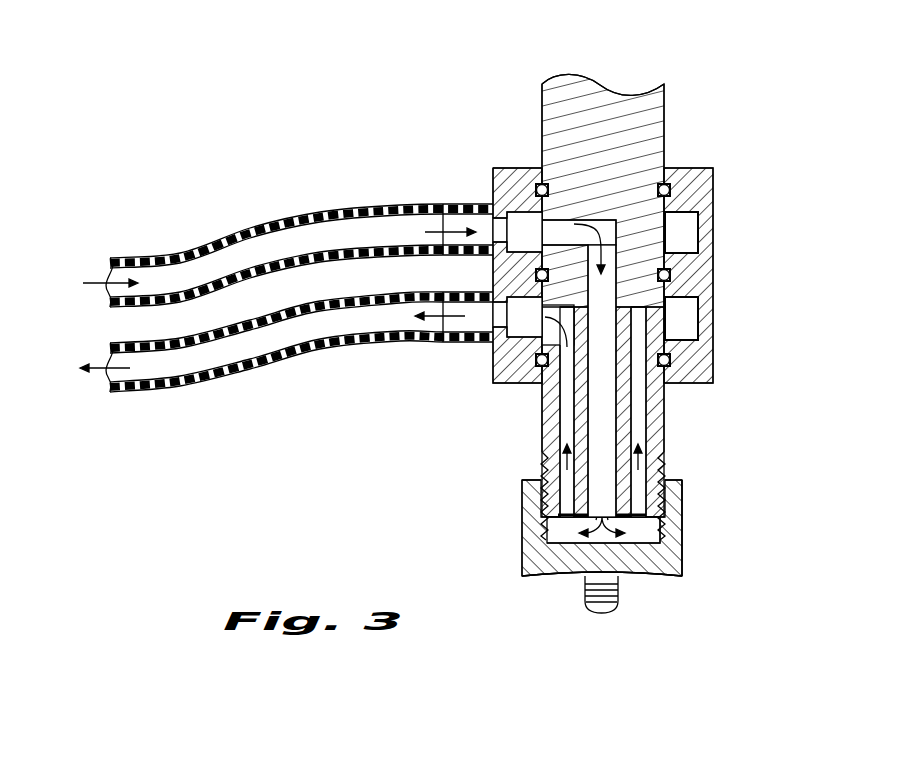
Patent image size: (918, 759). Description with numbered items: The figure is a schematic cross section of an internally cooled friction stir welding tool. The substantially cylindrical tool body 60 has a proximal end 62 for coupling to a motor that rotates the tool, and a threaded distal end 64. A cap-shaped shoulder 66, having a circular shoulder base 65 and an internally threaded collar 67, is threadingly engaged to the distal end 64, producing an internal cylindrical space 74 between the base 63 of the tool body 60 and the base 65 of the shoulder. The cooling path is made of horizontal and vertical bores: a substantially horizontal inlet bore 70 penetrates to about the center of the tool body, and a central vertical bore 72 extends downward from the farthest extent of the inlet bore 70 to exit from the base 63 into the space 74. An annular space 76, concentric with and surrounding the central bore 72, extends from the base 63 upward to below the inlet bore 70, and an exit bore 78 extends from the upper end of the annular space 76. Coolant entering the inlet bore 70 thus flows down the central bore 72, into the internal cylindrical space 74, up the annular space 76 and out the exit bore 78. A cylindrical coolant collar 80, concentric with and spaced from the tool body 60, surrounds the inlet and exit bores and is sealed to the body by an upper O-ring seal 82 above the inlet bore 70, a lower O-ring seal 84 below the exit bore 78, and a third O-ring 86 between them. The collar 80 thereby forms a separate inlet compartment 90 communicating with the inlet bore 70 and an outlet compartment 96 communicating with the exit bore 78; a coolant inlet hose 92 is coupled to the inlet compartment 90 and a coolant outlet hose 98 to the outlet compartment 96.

The tool body 60 is at (448, 126).
The proximal end 62 is at (605, 275).
The base of the tool body 63 is at (580, 530).
The threaded distal end 64 is at (566, 422).
The shoulder base 65 is at (662, 568).
The cap-shaped shoulder 66 is at (622, 569).
The internally threaded collar 67 is at (682, 499).
The horizontal inlet bore 70 is at (492, 232).
The central vertical bore 72 is at (602, 297).
The internal cylindrical space 74 is at (640, 535).
The annular space 76 is at (565, 424).
The exit bore 78 is at (478, 318).
The coolant collar 80 is at (607, 262).
The upper O-ring seal 82 is at (537, 184).
The lower O-ring seal 84 is at (536, 364).
The third O-ring 86 is at (535, 277).
The inlet compartment 90 is at (673, 228).
The coolant inlet hose 92 is at (238, 230).
The outlet compartment 96 is at (673, 324).
The coolant outlet hose 98 is at (252, 378).